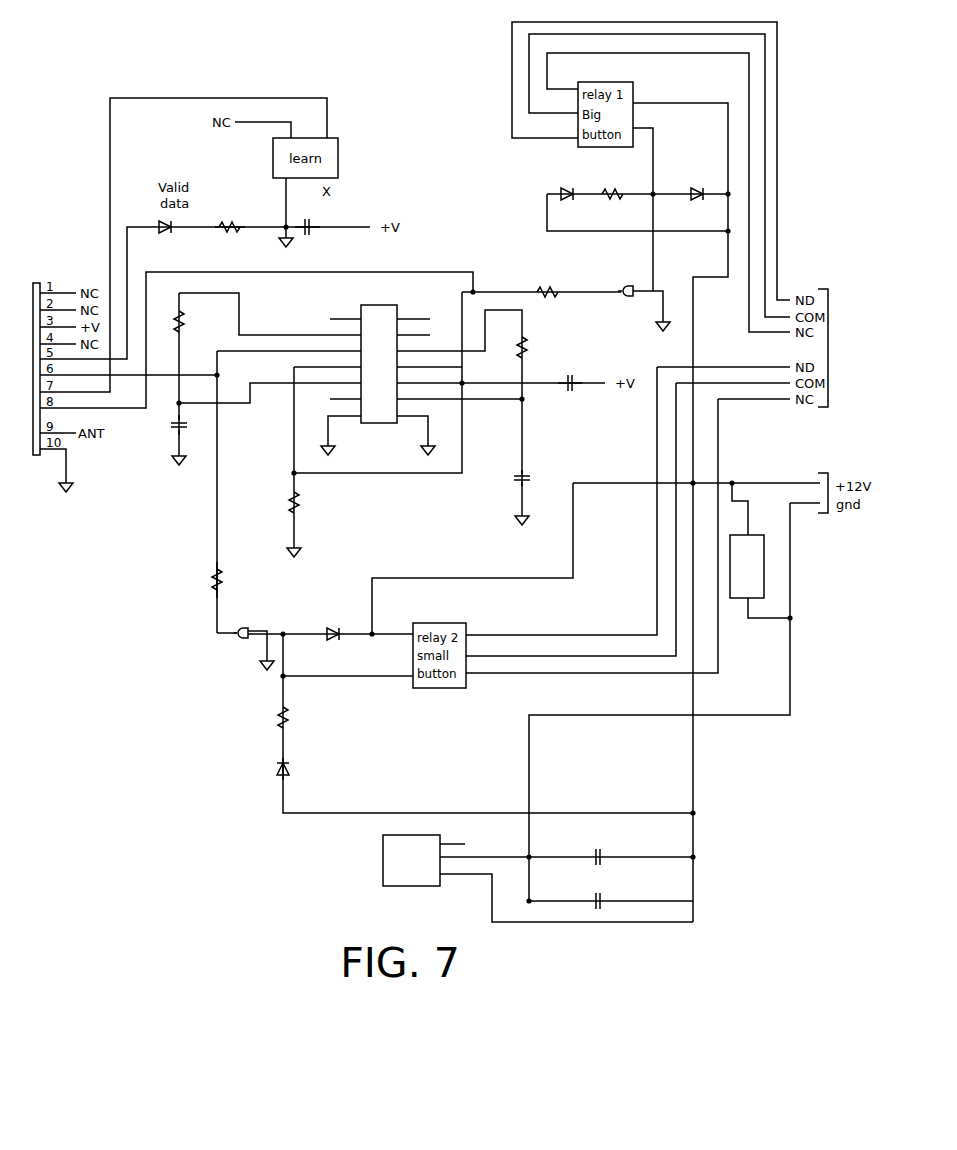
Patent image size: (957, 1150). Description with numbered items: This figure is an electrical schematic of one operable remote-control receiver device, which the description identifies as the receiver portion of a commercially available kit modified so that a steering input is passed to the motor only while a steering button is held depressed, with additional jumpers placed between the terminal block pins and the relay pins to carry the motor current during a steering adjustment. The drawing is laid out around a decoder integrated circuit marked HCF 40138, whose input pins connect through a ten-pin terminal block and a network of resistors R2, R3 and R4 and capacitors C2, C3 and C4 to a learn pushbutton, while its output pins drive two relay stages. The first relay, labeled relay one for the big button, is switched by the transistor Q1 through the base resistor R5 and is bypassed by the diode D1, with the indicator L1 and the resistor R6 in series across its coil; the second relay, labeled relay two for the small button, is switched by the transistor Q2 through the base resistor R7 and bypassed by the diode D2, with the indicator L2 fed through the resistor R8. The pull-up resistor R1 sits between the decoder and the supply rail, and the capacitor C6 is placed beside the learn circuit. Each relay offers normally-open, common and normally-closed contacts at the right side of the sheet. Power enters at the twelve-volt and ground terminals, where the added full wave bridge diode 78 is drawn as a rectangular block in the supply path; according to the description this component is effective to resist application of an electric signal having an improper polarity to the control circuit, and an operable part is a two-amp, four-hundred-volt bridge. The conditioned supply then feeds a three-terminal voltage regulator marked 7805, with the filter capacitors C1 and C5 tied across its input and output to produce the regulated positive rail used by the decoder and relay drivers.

The full wave bridge diode 78 is at (763, 569).
The resistor 10M R1 is at (527, 347).
The resistor 10M R2 is at (181, 322).
The resistor 1M R3 is at (230, 219).
The resistor 1M R4 is at (294, 502).
The resistor 4.7k R5 is at (548, 291).
The resistor 2.2k R6 is at (615, 193).
The resistor 4.7k R7 is at (221, 580).
The resistor 2.2k R8 is at (292, 718).
The capacitor C1 is at (598, 850).
The capacitor C2 is at (570, 375).
The capacitor C3 is at (533, 478).
The capacitor C4 is at (168, 425).
The capacitor C5 is at (598, 894).
The capacitor C6 is at (307, 217).
The diode D1 is at (697, 185).
The diode IN4004 D2 is at (336, 634).
The LED L1 is at (567, 185).
The LED L2 is at (273, 769).
The transistor BC547 Q1 is at (624, 291).
The transistor BC547 Q2 is at (234, 632).
The voltage regulator 7805 is at (435, 860).
The HCF 40138 decoder IC 40138 is at (335, 380).